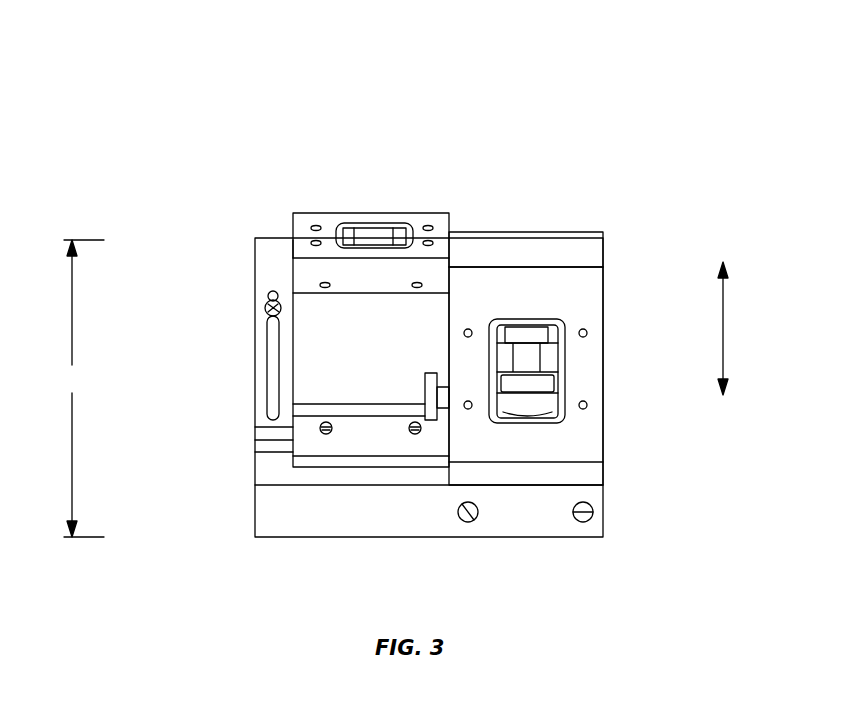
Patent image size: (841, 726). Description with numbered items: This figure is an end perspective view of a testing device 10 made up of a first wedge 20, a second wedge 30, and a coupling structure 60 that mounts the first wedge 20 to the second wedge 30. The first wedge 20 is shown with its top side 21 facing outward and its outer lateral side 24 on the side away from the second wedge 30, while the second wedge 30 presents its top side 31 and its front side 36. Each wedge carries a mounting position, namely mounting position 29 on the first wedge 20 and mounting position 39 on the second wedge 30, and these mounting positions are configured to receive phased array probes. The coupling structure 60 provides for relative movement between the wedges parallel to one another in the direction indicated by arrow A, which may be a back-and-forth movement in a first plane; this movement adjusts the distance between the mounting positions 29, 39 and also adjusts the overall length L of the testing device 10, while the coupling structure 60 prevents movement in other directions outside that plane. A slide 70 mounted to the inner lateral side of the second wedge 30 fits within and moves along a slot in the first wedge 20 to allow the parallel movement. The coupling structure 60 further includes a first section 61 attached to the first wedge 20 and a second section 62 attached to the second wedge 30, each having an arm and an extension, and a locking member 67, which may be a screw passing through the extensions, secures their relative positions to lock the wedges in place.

The testing device 10 is at (634, 128).
The first wedge 20 is at (290, 215).
The top side 21 is at (417, 225).
The outer lateral side 24 is at (293, 248).
The mounting position 29 is at (370, 235).
The second wedge 30 is at (596, 248).
The top side 31 is at (521, 283).
The front side 36 is at (590, 470).
The mounting position 39 is at (546, 353).
The coupling structure 60 is at (238, 456).
The first section 61 is at (262, 373).
The second section 62 is at (504, 525).
The locking member 67 is at (266, 312).
The slide 70 is at (437, 417).
The overall length L is at (83, 388).
The arrow A is at (724, 328).